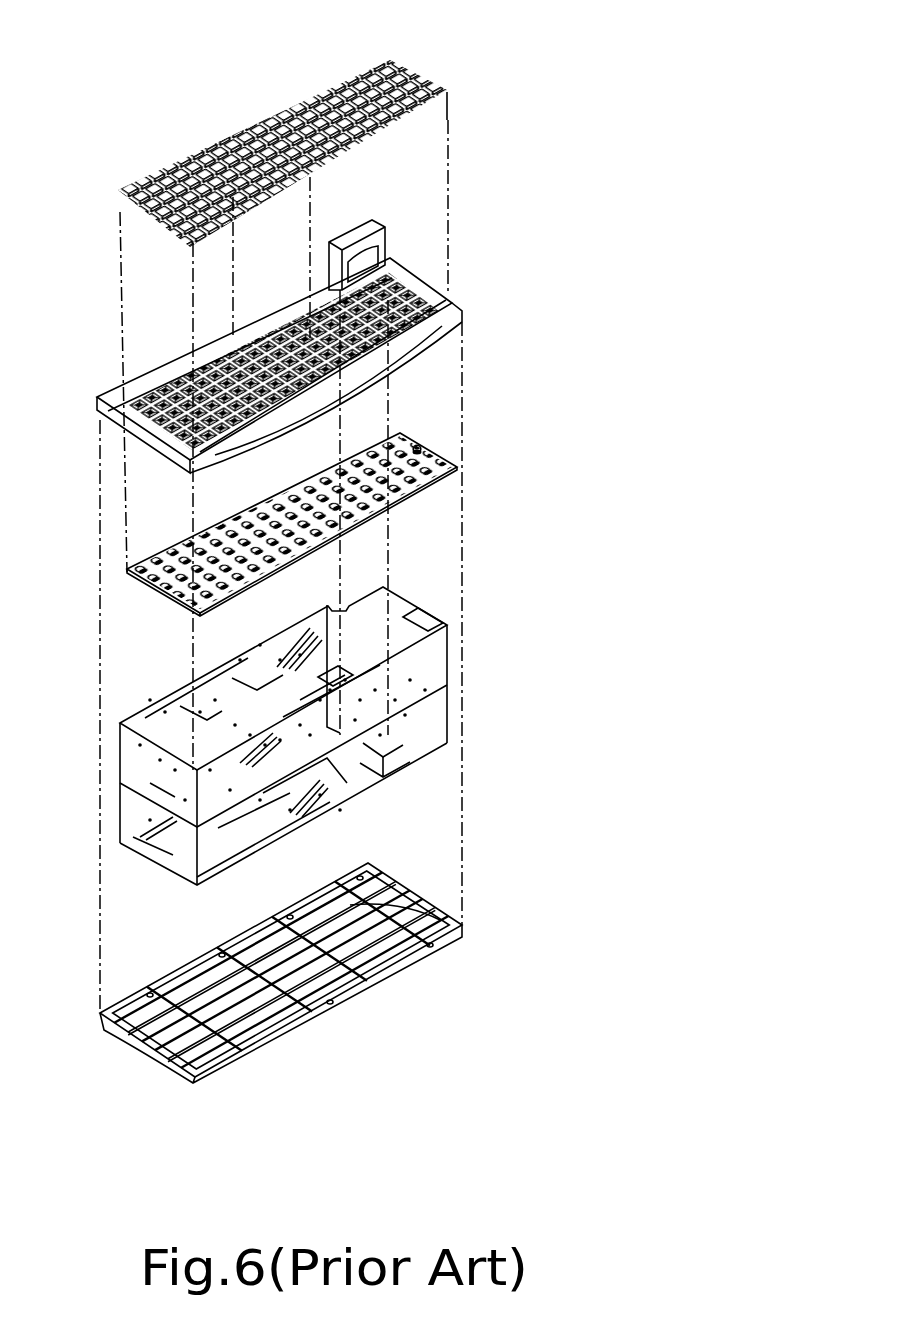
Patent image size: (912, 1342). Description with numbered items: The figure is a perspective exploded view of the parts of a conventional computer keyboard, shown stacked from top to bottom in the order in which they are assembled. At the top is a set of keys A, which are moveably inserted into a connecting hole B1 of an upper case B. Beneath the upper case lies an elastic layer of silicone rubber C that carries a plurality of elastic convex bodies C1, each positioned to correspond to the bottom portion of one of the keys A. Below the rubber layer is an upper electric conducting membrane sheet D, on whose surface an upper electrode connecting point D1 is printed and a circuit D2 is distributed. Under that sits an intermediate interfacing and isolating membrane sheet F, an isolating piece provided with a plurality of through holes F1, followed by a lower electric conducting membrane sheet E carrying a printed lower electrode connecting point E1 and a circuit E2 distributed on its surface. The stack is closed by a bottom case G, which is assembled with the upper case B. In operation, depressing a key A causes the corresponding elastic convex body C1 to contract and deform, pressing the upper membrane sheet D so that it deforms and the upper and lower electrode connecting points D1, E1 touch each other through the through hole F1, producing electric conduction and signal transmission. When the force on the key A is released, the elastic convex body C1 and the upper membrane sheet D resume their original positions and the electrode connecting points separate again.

The keys A is at (399, 72).
The upper case B is at (452, 300).
The connecting hole B1 is at (397, 270).
The elastic layer of silicone rubber C is at (378, 508).
The elastic convex body C1 is at (417, 450).
The upper electric conducting membrane sheet D is at (400, 605).
The upper electrode connecting point D1 is at (430, 620).
The circuit D2 is at (347, 645).
The lower electric conducting membrane sheet E is at (407, 753).
The lower electrode connecting point E1 is at (400, 740).
The circuit E2 is at (383, 773).
The intermediate interfacing and isolating membrane sheet F is at (155, 785).
The through hole F1 is at (158, 785).
The bottom case G is at (435, 910).